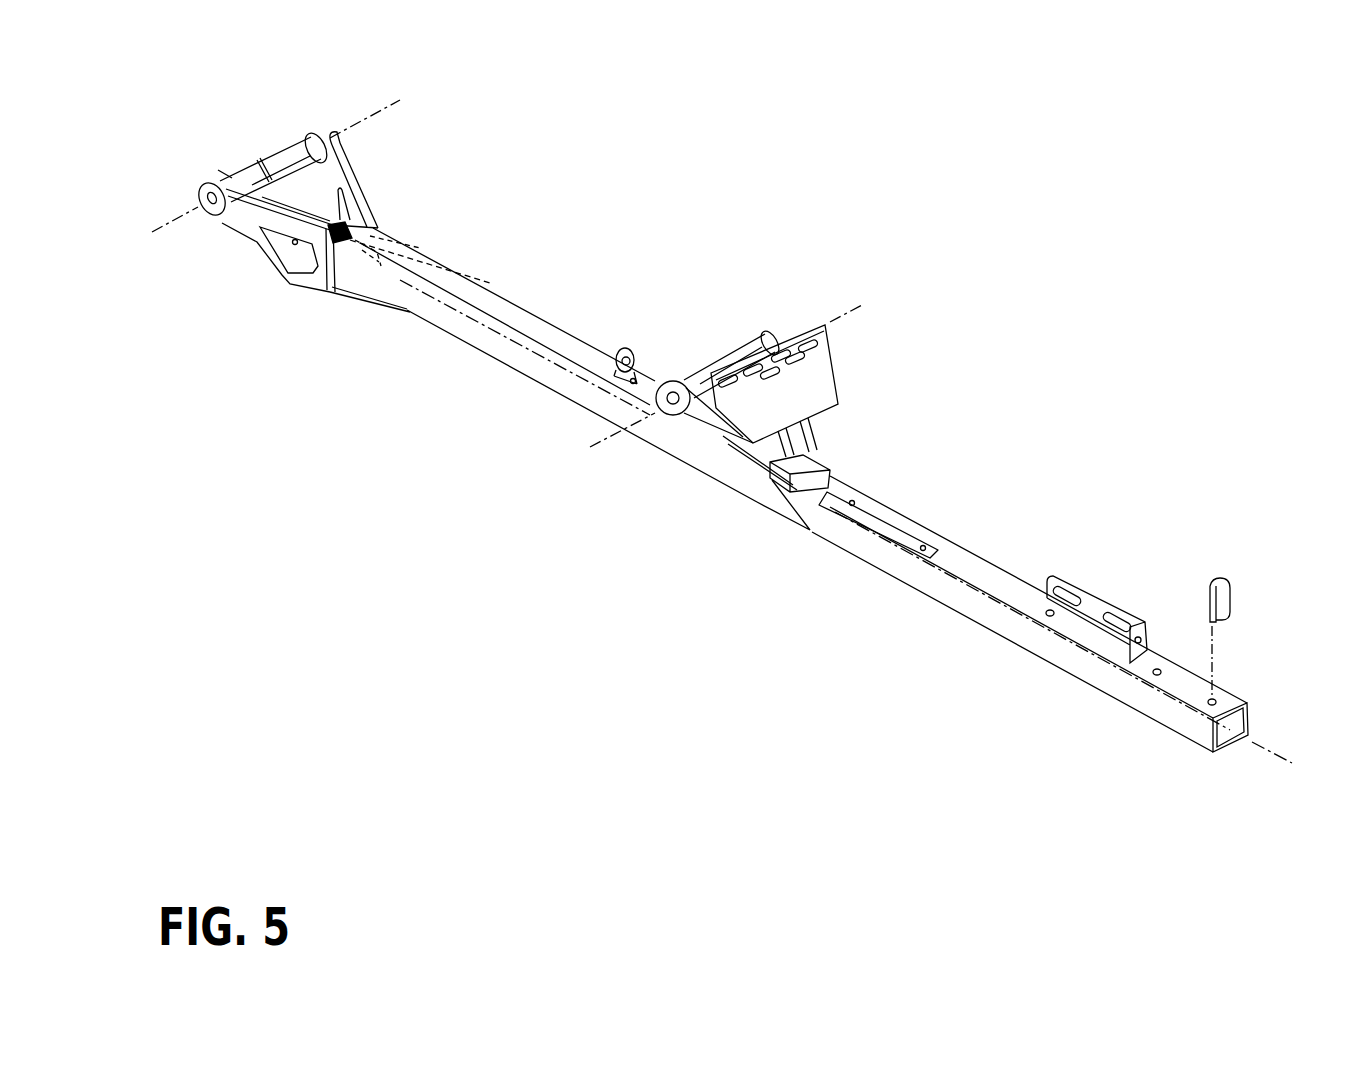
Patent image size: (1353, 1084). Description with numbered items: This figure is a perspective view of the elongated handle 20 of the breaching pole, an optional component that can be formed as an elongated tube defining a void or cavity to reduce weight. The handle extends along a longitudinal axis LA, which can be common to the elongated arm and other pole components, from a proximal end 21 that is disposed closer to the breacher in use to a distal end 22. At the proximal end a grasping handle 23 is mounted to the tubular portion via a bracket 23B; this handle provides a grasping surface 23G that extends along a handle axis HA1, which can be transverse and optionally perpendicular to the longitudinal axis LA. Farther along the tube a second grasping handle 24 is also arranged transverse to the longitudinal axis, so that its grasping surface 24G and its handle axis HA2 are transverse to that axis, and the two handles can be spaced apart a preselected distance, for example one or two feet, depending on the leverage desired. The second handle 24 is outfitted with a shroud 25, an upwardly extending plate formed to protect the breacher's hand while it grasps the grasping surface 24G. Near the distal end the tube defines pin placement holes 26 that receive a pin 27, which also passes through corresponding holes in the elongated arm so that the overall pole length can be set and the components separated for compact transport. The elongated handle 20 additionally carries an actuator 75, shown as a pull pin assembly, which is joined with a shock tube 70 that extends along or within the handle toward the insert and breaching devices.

The elongated handle 20 is at (550, 296).
The proximal end 21 is at (314, 320).
The distal end 22 is at (1181, 773).
The grasping handle 23 is at (296, 148).
The bracket 23B is at (324, 132).
The grasping surface 23G is at (262, 168).
The second grasping handle 24 is at (757, 338).
The grasping surface 24G is at (713, 367).
The shroud 25 is at (813, 377).
The pin placement holes 26 is at (1157, 675).
The pin 27 is at (1208, 592).
The shock tube 70 is at (491, 282).
The actuator 75 is at (380, 226).
The longitudinal axis LA is at (218, 170).
The handle axis HA1 is at (255, 181).
The handle axis HA2 is at (698, 401).